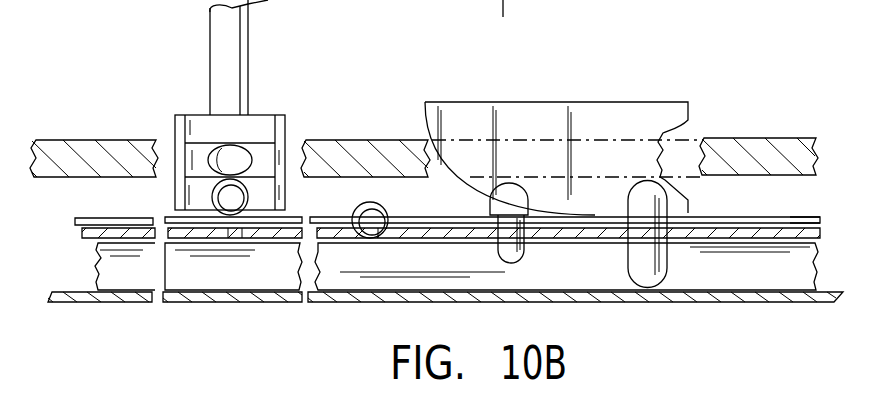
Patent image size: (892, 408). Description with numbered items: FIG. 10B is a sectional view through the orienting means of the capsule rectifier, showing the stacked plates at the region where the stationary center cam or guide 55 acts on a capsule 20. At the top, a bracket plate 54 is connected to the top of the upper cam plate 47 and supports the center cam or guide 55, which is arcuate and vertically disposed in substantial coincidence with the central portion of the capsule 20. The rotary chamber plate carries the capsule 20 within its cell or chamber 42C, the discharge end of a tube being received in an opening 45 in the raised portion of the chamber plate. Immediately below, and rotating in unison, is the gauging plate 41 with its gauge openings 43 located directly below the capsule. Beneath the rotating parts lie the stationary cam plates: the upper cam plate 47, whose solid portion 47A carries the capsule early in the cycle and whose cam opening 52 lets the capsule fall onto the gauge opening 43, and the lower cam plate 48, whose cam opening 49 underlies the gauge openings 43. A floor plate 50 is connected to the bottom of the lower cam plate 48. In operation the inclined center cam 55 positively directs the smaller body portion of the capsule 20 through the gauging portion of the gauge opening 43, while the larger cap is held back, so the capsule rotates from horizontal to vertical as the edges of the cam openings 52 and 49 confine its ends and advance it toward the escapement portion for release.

The bracket plate 54 is at (83, 138).
The cell or chamber 42C is at (195, 155).
The openings 45 is at (248, 147).
The capsule 20 is at (245, 196).
The solid portion of the upper cam plate 47A is at (98, 217).
The gauging plate 41 is at (313, 217).
The upper cam plate 47 is at (805, 215).
The lower cam plate 48 is at (97, 250).
The cam opening 52 is at (123, 220).
The floor plate 50 is at (770, 300).
The center cam or guide 55 is at (653, 100).
The cam opening 49 is at (338, 218).
The gauge openings 43 is at (230, 235).